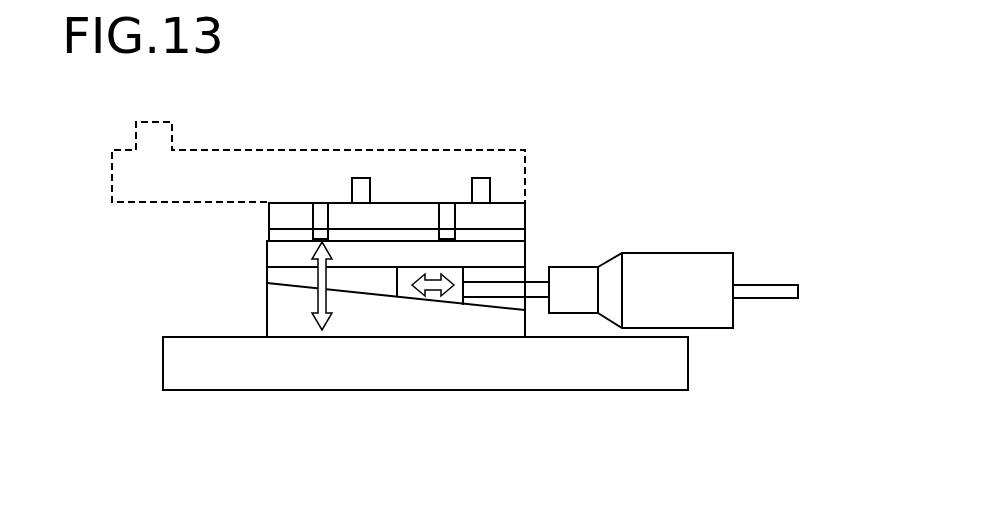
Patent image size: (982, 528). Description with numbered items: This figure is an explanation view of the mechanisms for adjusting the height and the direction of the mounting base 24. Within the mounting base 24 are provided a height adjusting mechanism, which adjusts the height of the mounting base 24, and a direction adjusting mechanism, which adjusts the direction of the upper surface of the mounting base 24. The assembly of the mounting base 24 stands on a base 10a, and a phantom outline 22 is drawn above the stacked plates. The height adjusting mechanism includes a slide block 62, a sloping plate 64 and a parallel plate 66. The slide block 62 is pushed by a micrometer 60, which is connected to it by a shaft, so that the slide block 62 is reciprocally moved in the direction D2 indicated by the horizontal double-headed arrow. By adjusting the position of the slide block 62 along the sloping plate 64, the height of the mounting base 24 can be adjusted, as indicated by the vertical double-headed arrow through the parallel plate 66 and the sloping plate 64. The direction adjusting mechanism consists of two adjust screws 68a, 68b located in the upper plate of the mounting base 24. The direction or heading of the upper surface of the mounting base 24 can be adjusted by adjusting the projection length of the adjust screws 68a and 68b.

The base 10a is at (672, 365).
The unit housing (phantom) 22 is at (234, 165).
The mounting base 24 is at (155, 272).
The micrometer 60 is at (683, 277).
The slide block 62 is at (453, 293).
The sloping plate 64 is at (375, 323).
The parallel plate 66 is at (280, 253).
The adjust screw 68a is at (320, 215).
The adjust screw 68b is at (447, 217).
The direction D2 is at (425, 298).